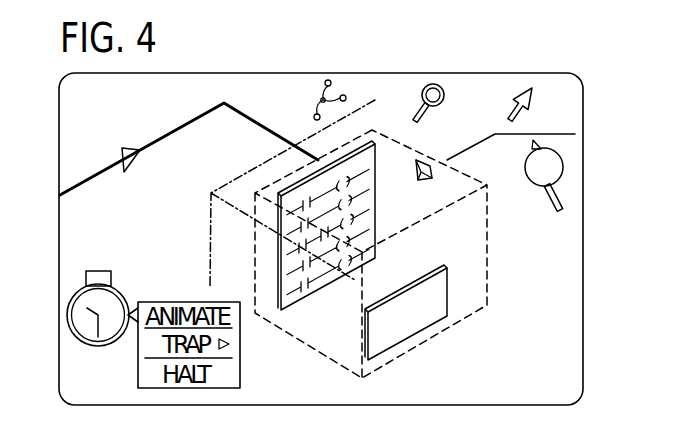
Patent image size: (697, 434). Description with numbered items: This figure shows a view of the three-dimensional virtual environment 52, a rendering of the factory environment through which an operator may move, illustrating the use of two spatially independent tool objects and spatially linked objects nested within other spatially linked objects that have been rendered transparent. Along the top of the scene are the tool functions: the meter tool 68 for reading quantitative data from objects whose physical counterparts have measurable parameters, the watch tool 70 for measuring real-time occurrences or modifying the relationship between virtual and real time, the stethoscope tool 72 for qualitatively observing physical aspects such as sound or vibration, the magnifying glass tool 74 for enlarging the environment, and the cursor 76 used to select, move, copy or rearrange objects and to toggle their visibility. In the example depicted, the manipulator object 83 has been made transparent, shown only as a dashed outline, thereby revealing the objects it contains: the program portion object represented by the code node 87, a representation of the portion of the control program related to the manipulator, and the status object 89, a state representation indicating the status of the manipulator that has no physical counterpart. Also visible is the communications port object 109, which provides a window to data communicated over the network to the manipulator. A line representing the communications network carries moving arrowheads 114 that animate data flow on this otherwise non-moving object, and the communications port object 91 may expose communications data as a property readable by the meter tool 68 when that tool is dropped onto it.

The three-dimensional virtual environment 52 is at (592, 179).
The meter tool 68 is at (560, 150).
The watch tool 70 is at (78, 288).
The stethoscope tool 72 is at (322, 98).
The magnifying glass tool 74 is at (434, 84).
The cursor 76 is at (521, 90).
The manipulator object 83 is at (488, 293).
The code node 87 is at (375, 143).
The status object 89 is at (448, 312).
The communications port object 91 is at (213, 104).
The communications port object 109 is at (433, 178).
The moving arrowheads 114 is at (132, 147).